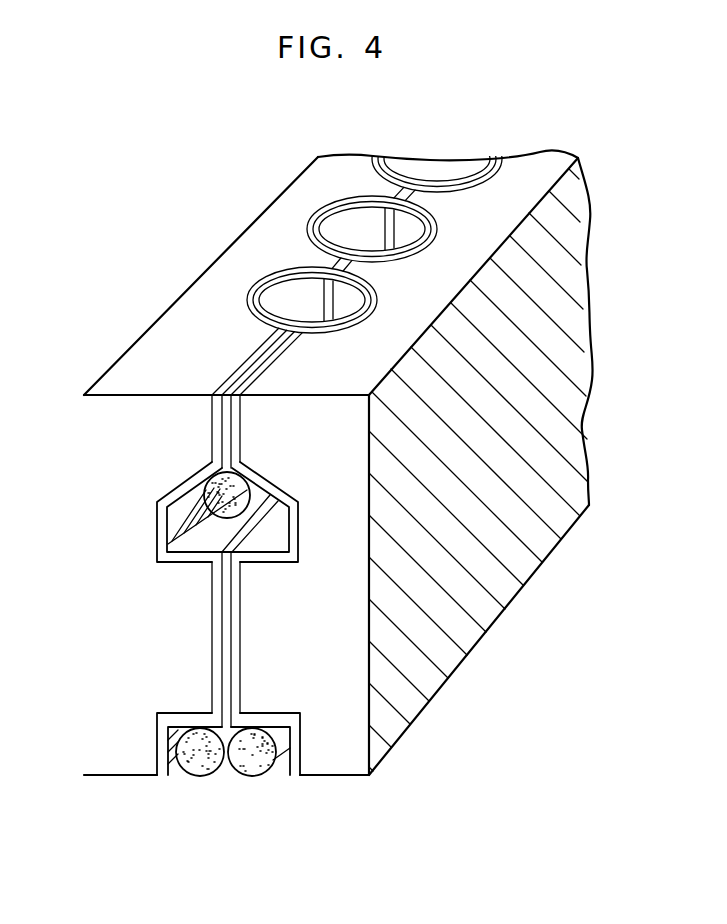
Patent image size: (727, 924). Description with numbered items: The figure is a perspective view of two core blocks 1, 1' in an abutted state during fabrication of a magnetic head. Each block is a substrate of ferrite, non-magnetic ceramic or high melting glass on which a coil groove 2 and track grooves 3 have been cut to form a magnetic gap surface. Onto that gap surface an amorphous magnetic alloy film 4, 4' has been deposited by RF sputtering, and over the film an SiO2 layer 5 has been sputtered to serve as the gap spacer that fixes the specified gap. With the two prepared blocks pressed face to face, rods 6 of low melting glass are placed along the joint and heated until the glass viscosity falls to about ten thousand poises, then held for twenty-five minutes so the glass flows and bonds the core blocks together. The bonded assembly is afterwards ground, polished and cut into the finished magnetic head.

The core block 1 is at (338, 450).
The core block 1' is at (503, 466).
The coil groove 2 is at (278, 528).
The track groove 3 is at (273, 298).
The amorphous magnetic alloy film 4 is at (434, 208).
The amorphous magnetic alloy film 4' is at (477, 224).
The SiO2 layer 5 is at (330, 260).
The rod 6 is at (252, 748).